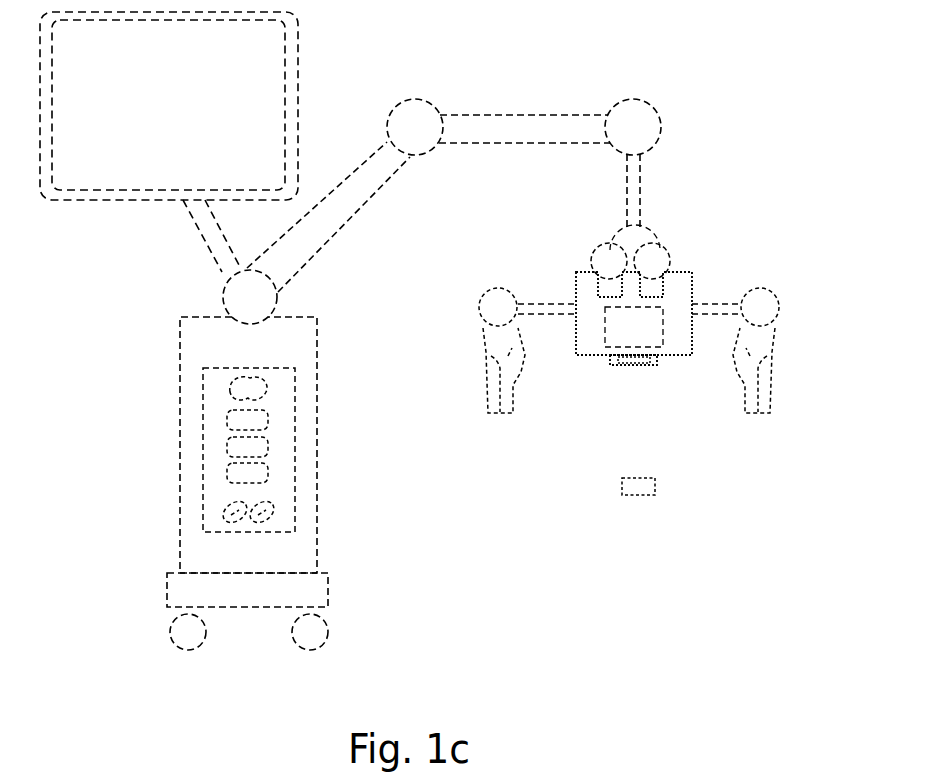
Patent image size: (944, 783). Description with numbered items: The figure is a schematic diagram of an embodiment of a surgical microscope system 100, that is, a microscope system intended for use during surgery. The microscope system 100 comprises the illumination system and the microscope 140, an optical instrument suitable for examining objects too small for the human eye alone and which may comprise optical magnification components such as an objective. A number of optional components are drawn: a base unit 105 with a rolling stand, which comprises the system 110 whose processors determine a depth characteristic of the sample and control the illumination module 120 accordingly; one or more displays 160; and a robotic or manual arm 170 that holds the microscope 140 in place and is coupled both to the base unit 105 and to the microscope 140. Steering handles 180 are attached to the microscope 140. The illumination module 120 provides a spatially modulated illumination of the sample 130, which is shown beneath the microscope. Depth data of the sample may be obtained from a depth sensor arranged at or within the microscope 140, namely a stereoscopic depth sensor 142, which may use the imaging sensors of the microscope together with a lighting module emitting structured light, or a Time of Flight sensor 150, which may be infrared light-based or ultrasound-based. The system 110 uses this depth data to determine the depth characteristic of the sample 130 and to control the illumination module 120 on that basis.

The microscope system 100 is at (731, 633).
The base unit 105 is at (330, 590).
The system 110 is at (295, 516).
The illumination module 120 is at (660, 362).
The sample 130 is at (657, 492).
The microscope 140 is at (695, 300).
The stereoscopic depth sensor 142 is at (597, 288).
The Time of Flight sensor 150 is at (612, 362).
The display 160 is at (298, 44).
The arm 170 is at (661, 127).
The steering handles 180 is at (784, 345).